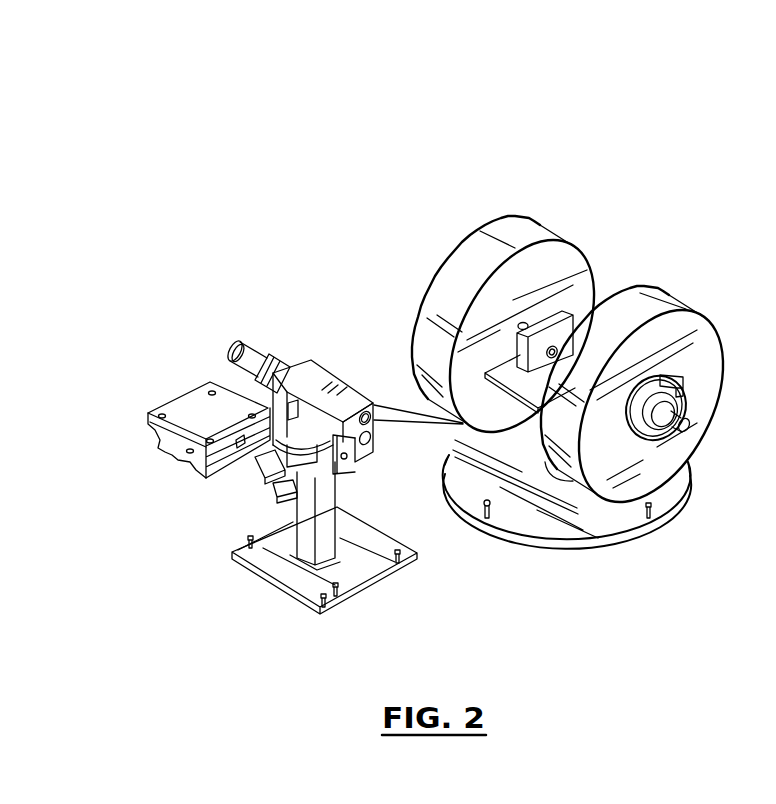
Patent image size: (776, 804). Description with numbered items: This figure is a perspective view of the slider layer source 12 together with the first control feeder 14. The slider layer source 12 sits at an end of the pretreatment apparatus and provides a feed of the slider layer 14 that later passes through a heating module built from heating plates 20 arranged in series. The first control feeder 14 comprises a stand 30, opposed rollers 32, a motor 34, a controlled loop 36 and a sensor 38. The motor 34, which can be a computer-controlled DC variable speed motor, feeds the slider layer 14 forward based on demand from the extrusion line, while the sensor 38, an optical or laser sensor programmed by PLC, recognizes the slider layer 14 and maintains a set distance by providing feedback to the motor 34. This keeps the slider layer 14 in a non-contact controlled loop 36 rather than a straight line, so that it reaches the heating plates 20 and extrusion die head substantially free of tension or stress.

The slider layer source 12 is at (592, 260).
The slider layer 14 is at (416, 401).
The heating plates 20 is at (192, 405).
The stand 30 is at (303, 530).
The opposed rollers 32 is at (377, 410).
The motor 34 is at (230, 345).
The controlled loop 36 is at (277, 462).
The sensor 38 is at (275, 488).